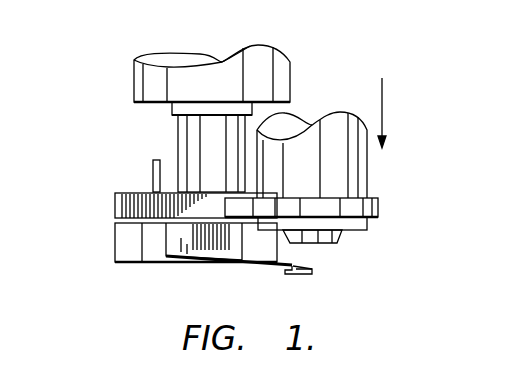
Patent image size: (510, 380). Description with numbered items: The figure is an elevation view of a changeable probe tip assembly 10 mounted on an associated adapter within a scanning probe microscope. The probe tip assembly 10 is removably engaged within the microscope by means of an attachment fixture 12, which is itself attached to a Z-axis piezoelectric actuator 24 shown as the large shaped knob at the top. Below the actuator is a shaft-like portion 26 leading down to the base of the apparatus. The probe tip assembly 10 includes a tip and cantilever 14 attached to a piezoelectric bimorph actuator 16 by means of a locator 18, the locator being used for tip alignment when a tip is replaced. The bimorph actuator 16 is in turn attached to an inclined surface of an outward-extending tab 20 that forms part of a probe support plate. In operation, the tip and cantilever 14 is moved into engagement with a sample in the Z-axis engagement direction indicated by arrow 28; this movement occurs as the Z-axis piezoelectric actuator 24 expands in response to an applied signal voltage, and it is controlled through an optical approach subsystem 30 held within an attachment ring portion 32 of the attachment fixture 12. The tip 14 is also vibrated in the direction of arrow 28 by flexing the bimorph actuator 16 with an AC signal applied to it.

The probe tip assembly 10 is at (98, 243).
The attachment fixture 12 is at (98, 206).
The tip and cantilever 14 is at (310, 276).
The piezoelectric bimorph actuator 16 is at (267, 270).
The locator 18 is at (294, 267).
The outward-extending tab 20 is at (166, 238).
The Z-axis piezoelectric actuator 24 is at (134, 86).
The shaft 26 is at (178, 148).
The arrow 28 is at (383, 110).
The optical approach subsystem 30 is at (367, 173).
The attachment ring portion 32 is at (378, 208).